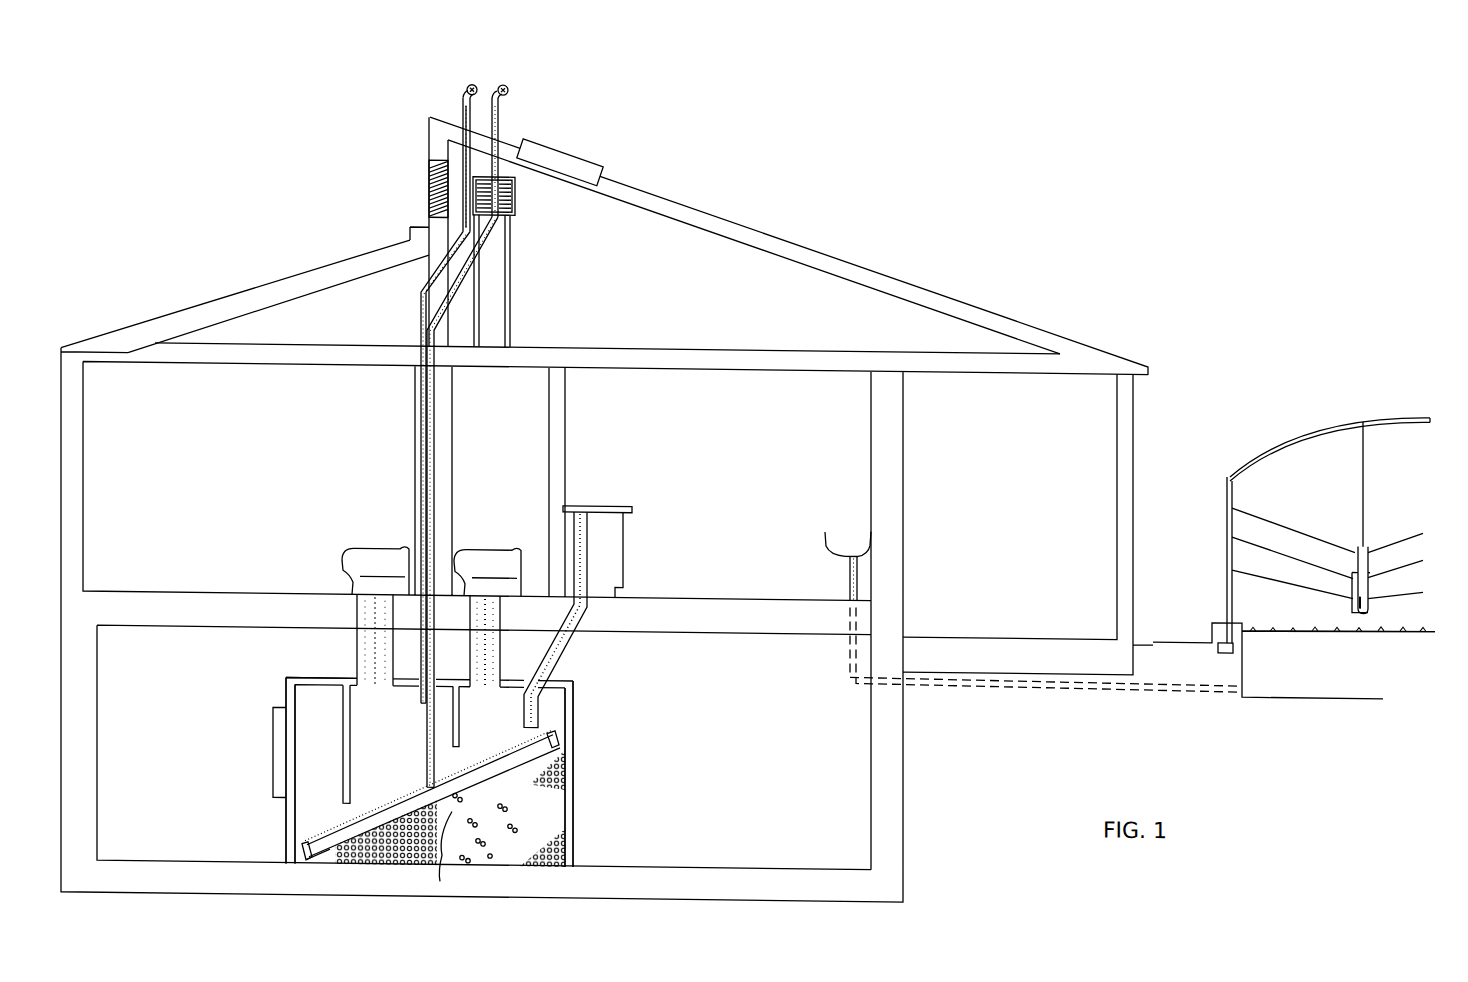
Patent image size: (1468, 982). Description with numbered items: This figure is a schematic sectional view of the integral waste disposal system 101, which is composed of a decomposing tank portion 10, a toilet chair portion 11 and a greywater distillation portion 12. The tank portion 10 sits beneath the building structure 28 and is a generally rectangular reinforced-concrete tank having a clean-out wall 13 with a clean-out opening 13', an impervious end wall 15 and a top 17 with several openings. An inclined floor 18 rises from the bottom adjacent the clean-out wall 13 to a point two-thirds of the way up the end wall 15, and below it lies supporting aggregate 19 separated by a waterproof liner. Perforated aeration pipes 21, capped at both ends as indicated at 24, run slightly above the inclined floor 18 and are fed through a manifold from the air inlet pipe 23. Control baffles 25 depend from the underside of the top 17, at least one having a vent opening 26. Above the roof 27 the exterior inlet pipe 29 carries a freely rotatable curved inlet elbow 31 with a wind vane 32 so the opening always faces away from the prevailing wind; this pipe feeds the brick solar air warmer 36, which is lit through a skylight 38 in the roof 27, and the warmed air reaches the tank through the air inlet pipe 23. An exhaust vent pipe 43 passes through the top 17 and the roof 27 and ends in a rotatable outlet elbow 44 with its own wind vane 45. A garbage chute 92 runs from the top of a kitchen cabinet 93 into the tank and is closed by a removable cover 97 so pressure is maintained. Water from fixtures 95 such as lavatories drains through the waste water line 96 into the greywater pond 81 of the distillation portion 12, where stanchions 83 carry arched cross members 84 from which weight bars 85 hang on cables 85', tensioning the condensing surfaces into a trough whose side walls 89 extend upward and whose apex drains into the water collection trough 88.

The decomposing tank portion 10 is at (591, 664).
The toilet chair portion 11 is at (361, 534).
The greywater distillation portion 12 is at (1288, 376).
The clean-out wall 13 is at (254, 770).
The clean-out opening 13' is at (247, 752).
The impervious end wall 15 is at (567, 816).
The top 17 is at (318, 675).
The inclined floor 18 is at (340, 838).
The aggregate 19 is at (507, 843).
The perforated aeration pipes 21 is at (392, 802).
The air inlet pipe 23 is at (456, 283).
The caps 24 is at (560, 733).
The control baffles 25 is at (342, 730).
The vent opening 26 is at (440, 876).
The roof 27 is at (840, 249).
The building structure 28 is at (1140, 420).
The exterior inlet pipe 29 is at (498, 128).
The curved inlet elbow 31 is at (510, 90).
The wind vane 32 is at (505, 80).
The solar air warmer 36 is at (516, 196).
The skylight 38 is at (585, 152).
The exhaust vent pipe 43 is at (412, 232).
The outlet elbow 44 is at (466, 86).
The wind vane 45 is at (477, 83).
The pond 81 is at (1392, 616).
The stanchions 83 is at (1232, 575).
The arched cross members 84 is at (1365, 406).
The weight bars 85 is at (1383, 557).
The cables 85' is at (1392, 485).
The water collection trough 88 is at (1358, 604).
The side walls 89 is at (1226, 530).
The garbage chute 92 is at (586, 572).
The kitchen cabinet 93 is at (625, 540).
The fixtures 95 is at (840, 522).
The waste water line 96 is at (1097, 676).
The removable cover 97 is at (590, 500).
The integral waste disposal system 101 is at (1082, 264).